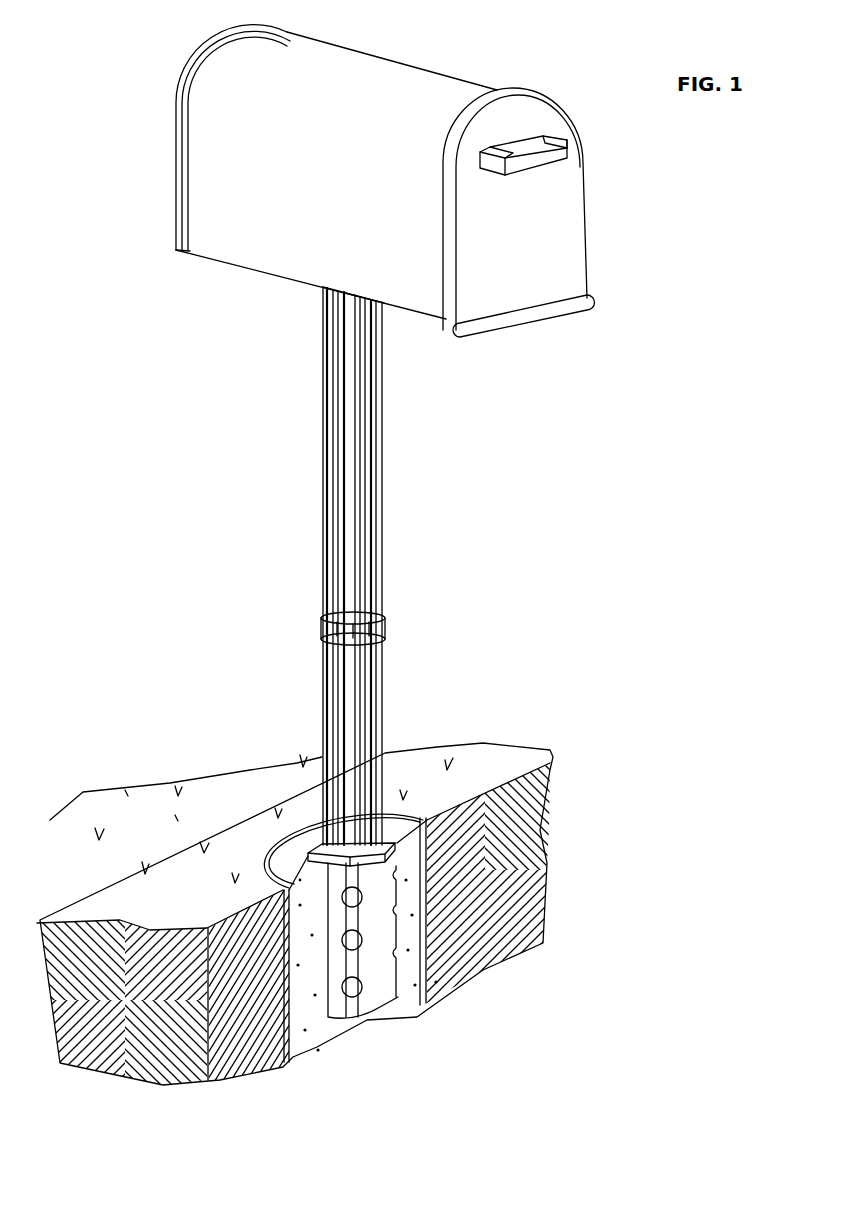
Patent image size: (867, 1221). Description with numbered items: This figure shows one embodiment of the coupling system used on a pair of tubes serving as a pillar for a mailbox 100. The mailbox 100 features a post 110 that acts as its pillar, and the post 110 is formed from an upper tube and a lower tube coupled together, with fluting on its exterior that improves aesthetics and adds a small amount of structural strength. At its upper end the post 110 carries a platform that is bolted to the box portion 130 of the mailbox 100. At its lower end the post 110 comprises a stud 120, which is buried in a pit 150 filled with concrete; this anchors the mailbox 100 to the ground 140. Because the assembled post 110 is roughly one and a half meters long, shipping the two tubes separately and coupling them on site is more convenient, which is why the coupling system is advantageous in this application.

The mailbox 100 is at (66, 164).
The post 110 is at (322, 398).
The stud 120 is at (368, 978).
The box portion 130 is at (197, 65).
The ground 140 is at (217, 783).
The pit 150 is at (397, 943).